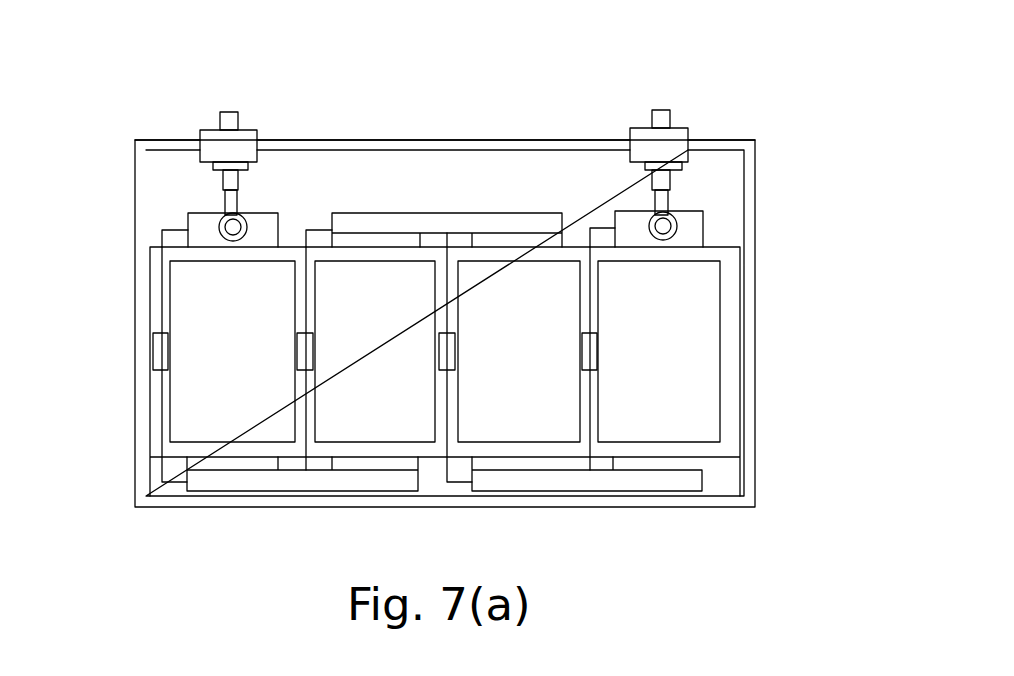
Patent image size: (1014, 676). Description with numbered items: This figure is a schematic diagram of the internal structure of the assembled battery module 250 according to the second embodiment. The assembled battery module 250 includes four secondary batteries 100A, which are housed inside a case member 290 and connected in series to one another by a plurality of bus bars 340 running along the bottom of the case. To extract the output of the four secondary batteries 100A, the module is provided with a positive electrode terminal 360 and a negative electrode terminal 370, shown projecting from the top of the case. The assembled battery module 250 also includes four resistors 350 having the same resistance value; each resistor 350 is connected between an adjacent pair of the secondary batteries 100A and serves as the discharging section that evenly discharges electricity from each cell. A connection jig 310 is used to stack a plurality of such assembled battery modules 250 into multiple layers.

The assembled battery module 250 is at (437, 76).
The case member 290 is at (755, 208).
The connection jig 310 is at (689, 131).
The bus bar 340 is at (602, 483).
The resistor 350 is at (158, 348).
The positive electrode terminal 360 is at (230, 110).
The negative electrode terminal 370 is at (663, 107).
The secondary battery 100A is at (702, 360).